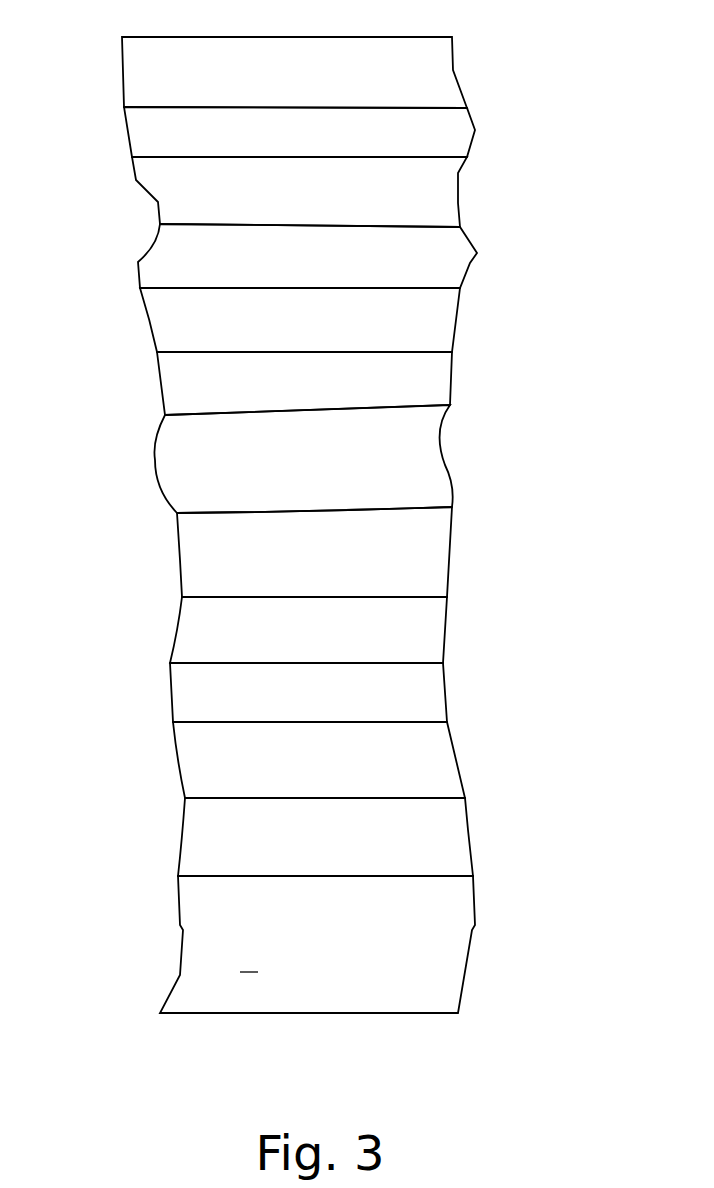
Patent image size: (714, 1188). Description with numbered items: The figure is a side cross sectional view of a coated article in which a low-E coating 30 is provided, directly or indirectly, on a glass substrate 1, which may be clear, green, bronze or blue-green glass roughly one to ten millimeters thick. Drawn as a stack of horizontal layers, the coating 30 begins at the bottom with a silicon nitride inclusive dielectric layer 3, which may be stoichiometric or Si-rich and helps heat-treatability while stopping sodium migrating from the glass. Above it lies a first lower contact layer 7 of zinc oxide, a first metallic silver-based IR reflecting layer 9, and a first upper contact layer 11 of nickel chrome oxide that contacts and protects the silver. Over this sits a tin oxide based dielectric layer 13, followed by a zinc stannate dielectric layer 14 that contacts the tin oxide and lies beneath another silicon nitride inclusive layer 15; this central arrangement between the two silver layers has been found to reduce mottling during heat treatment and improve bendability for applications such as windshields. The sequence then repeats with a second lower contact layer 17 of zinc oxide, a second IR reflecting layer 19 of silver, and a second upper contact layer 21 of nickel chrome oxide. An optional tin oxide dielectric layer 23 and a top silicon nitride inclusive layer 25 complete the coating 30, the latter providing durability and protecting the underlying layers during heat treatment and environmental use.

The substrate 1 is at (448, 952).
The bottom silicon nitride inclusive dielectric layer 3 is at (442, 850).
The first lower contact layer 7 is at (443, 758).
The first infrared (IR) reflecting layer 9 is at (427, 690).
The first upper contact layer 11 is at (430, 627).
The dielectric layer 13 is at (427, 557).
The zinc stannate dielectric layer 14 is at (432, 460).
The silicon nitride inclusive dielectric layer 15 is at (432, 388).
The second lower contact layer 17 is at (430, 332).
The second infrared (IR) reflecting layer 19 is at (437, 260).
The second upper contact layer 21 is at (440, 200).
The dielectric layer 23 is at (452, 138).
The silicon nitride inclusive layer 25 is at (437, 80).
The low-E coating 30 is at (105, 847).